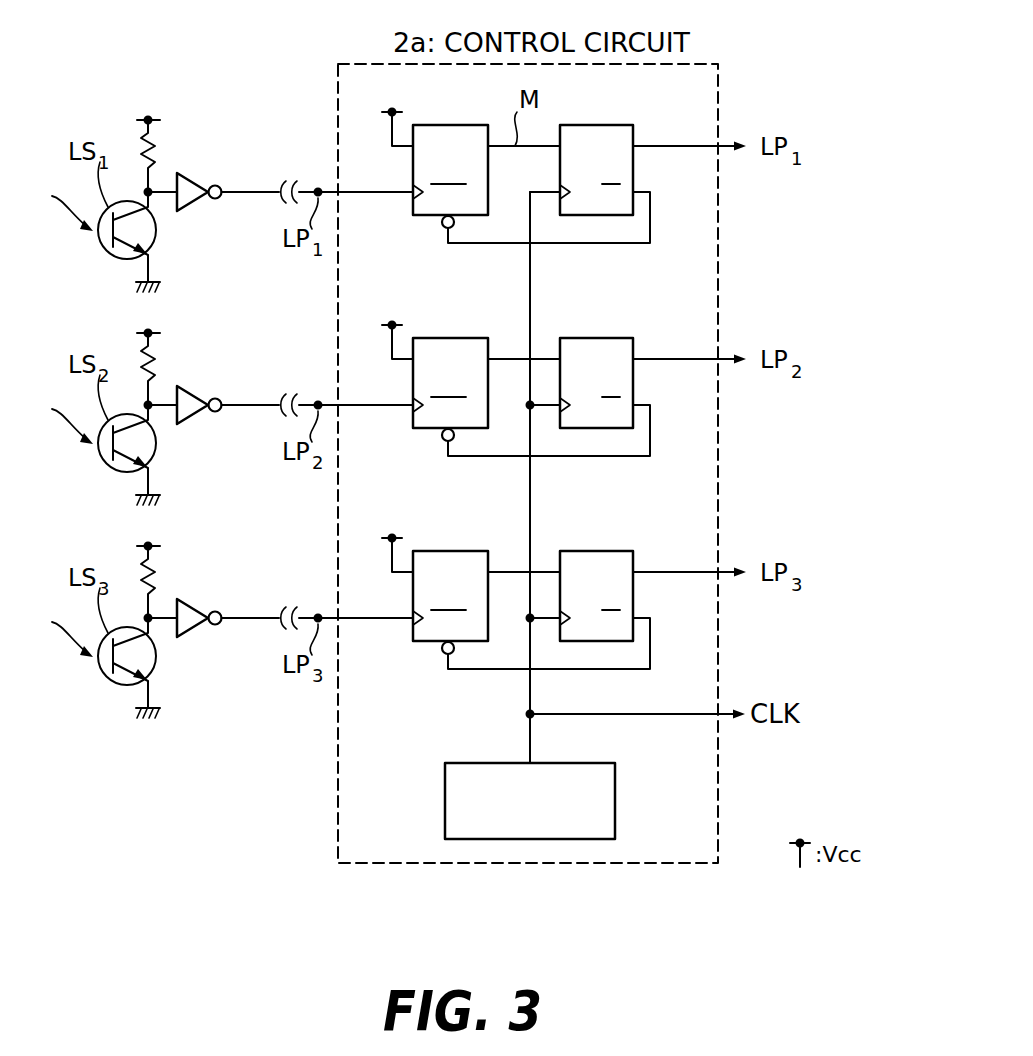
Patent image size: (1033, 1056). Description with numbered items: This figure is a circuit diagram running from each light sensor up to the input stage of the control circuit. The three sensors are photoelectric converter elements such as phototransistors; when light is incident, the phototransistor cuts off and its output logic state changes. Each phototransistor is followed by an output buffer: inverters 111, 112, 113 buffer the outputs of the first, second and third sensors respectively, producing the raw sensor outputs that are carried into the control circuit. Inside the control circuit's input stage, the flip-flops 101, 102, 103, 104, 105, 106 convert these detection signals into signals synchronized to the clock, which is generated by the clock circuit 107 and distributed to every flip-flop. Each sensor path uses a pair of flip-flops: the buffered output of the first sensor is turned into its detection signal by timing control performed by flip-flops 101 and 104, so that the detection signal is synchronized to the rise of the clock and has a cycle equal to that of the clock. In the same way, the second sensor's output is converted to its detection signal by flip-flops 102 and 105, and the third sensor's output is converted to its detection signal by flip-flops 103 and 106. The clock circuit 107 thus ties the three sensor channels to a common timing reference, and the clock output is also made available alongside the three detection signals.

The flip-flop 101 is at (455, 125).
The flip-flop 102 is at (435, 363).
The flip-flop 103 is at (435, 576).
The flip-flop 104 is at (585, 125).
The flip-flop 105 is at (549, 370).
The flip-flop 106 is at (549, 583).
The clock circuit 107 is at (615, 803).
The inverter 111 is at (192, 174).
The inverter 112 is at (204, 370).
The inverter 113 is at (204, 583).